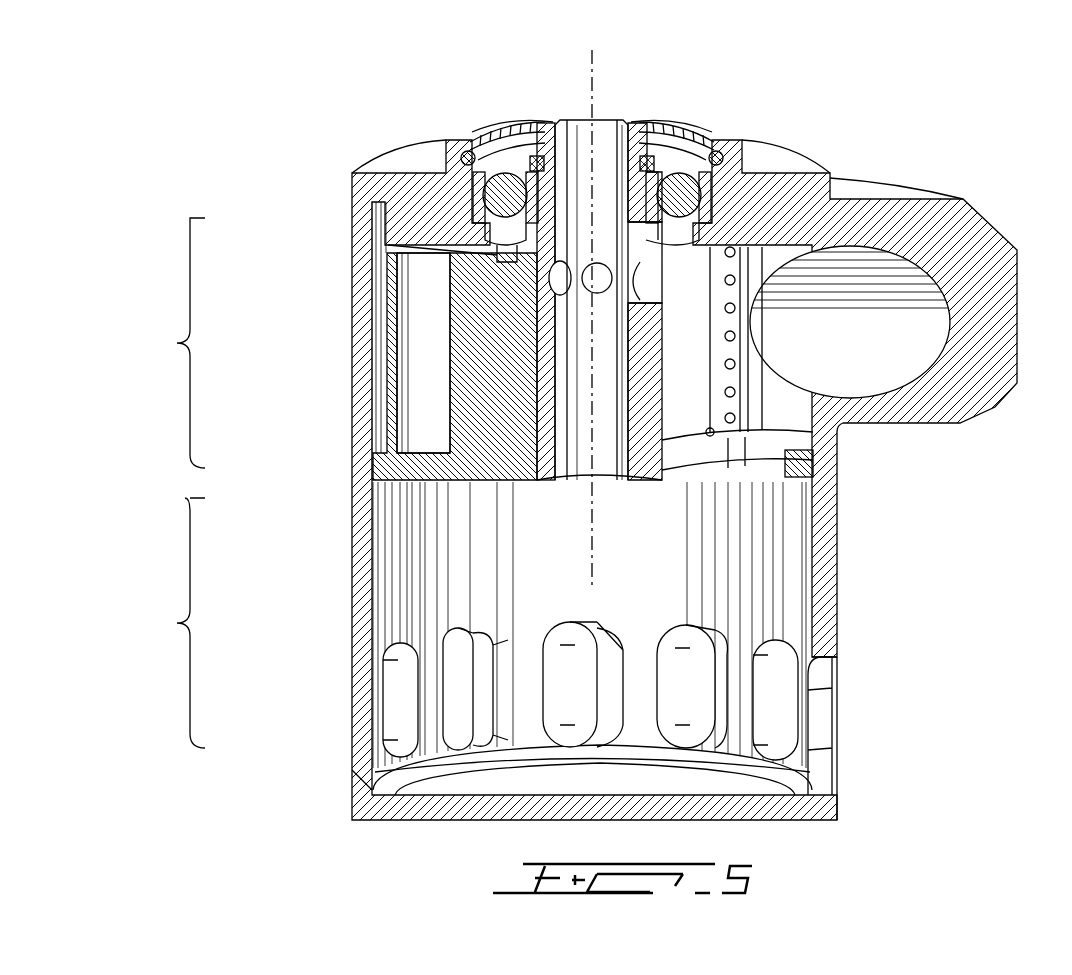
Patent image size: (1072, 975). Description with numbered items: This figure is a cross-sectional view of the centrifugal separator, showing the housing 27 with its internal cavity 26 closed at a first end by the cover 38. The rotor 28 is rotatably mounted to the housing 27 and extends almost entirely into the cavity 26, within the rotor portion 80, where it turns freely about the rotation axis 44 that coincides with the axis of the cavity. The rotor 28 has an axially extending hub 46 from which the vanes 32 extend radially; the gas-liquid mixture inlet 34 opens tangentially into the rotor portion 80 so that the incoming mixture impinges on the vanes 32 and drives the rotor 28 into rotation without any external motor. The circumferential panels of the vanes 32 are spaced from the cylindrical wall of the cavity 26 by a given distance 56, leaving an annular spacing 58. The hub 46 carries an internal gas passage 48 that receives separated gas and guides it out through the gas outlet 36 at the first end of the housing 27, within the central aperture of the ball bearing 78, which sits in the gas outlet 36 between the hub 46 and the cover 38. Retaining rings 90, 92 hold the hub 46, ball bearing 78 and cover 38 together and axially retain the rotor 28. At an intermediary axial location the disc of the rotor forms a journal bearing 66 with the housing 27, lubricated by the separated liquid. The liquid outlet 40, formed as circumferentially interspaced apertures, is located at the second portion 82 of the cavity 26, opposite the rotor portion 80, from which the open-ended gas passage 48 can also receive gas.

The internal cavity 26 is at (722, 538).
The housing 27 is at (837, 607).
The rotor 28 is at (408, 292).
The vanes 32 is at (428, 325).
The gas-liquid mixture inlet 34 is at (907, 305).
The gas outlet 36 is at (620, 178).
The cover 38 is at (770, 155).
The liquid outlet 40 is at (565, 707).
The rotation axis 44 is at (592, 72).
The hub 46 is at (660, 372).
The gas passage 48 is at (568, 130).
The distance 56 is at (385, 200).
The annular spacing 58 is at (378, 397).
The journal bearing 66 is at (310, 472).
The ball bearing 78 is at (507, 190).
The rotor portion 80 is at (173, 343).
The second portion 82 is at (475, 627).
The retaining ring 90 is at (470, 151).
The retaining ring 92 is at (538, 162).